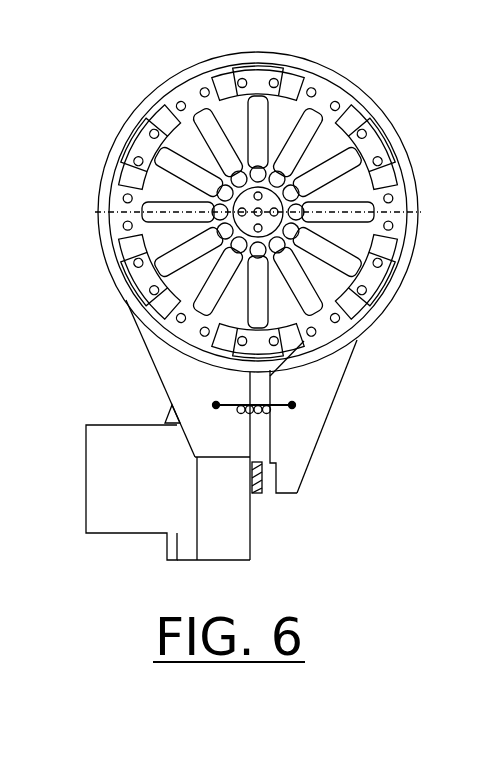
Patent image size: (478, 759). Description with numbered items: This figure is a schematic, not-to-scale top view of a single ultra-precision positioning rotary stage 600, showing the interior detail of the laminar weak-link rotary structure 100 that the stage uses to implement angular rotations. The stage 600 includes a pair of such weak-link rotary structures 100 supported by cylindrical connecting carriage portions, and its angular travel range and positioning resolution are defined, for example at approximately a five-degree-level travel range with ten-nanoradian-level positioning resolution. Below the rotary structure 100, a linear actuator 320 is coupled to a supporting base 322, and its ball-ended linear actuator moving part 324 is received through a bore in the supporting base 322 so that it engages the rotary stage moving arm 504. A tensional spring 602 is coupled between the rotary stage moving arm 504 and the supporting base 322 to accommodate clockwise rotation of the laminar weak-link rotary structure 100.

The ultra-precision positioning rotary stage 600 is at (270, 29).
The laminar weak-link rotary structure 100 is at (172, 93).
The supporting base 322 is at (175, 377).
The linear actuator 320 is at (134, 457).
The rotary stage moving arm 504 is at (307, 443).
The ball-ended linear actuator moving part 324 is at (263, 483).
The tensional spring 602 is at (262, 410).